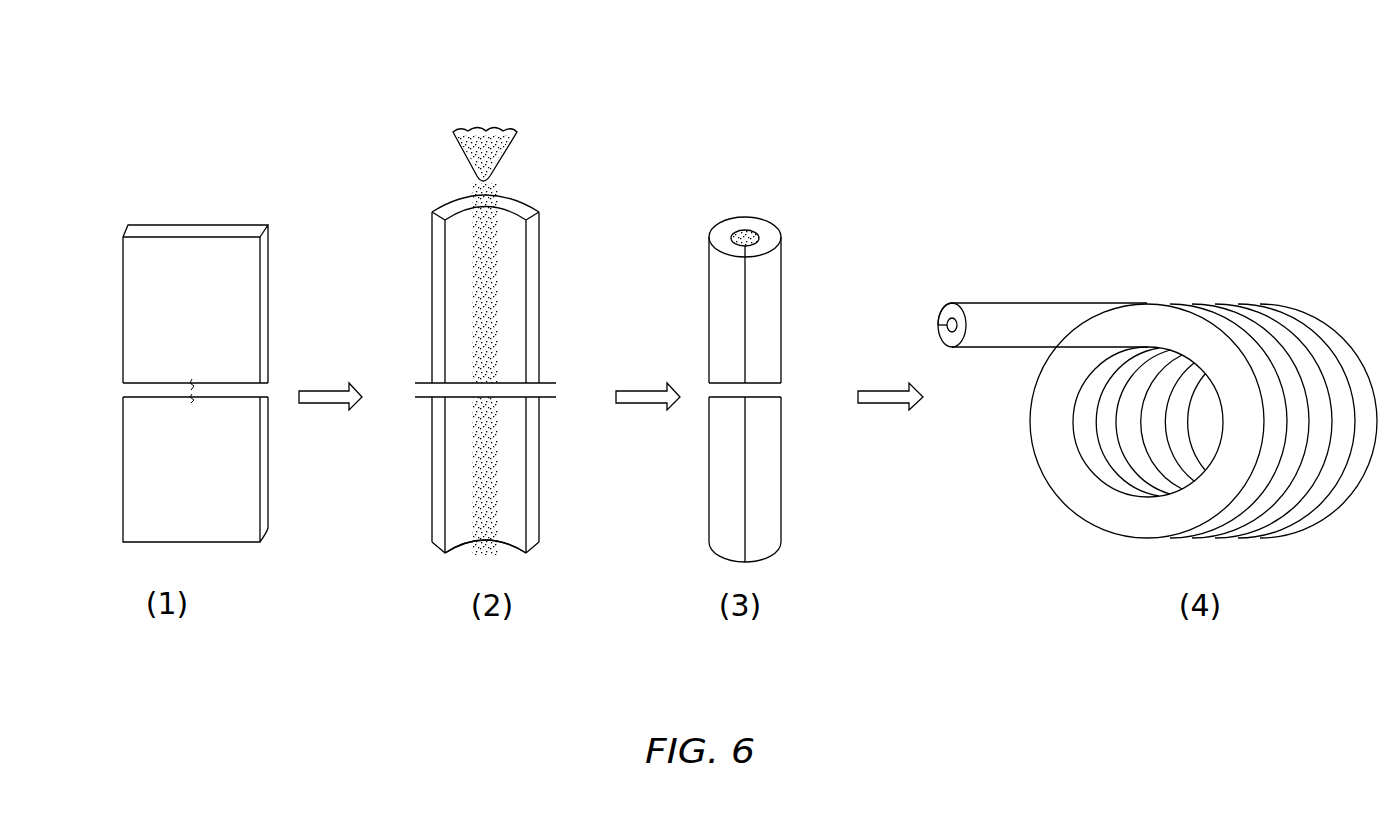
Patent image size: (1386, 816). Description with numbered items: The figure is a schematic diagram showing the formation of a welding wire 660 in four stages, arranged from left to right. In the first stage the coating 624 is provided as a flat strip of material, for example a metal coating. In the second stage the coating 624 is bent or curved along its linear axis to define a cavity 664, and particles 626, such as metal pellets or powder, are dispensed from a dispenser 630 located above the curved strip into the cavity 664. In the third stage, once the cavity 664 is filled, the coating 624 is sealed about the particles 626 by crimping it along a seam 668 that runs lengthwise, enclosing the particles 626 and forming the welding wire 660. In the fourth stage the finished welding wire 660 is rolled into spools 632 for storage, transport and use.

The coating 624 is at (140, 224).
The particles 626 is at (473, 132).
The dispenser 630 is at (518, 138).
The cavity 664 is at (510, 520).
The seam 668 is at (745, 295).
The spools 632 is at (1262, 333).
The welding wire 660 is at (1173, 240).